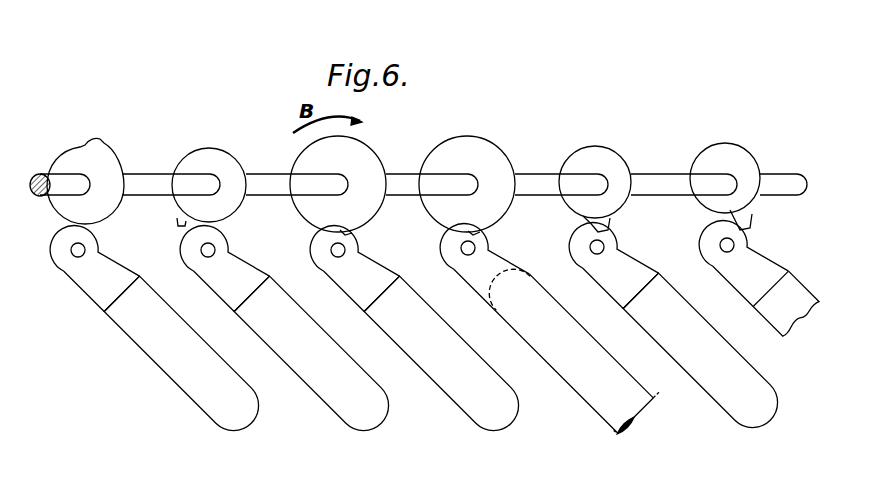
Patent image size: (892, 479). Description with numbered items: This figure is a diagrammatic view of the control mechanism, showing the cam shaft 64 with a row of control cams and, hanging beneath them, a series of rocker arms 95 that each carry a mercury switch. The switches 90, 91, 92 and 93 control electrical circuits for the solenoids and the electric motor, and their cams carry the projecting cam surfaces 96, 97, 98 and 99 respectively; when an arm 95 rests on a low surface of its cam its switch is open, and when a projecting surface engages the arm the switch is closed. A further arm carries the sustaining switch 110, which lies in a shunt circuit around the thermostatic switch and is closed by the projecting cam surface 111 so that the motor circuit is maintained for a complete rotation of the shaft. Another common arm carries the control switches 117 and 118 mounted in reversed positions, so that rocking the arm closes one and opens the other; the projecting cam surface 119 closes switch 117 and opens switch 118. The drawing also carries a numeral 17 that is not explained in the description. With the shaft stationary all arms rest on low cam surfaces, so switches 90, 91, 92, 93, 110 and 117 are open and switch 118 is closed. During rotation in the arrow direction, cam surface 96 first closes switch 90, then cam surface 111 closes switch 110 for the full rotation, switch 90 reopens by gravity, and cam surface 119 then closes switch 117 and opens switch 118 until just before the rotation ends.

The cam shaft 64 is at (530, 182).
The cam surface 99 is at (107, 162).
The cam surface 98 is at (180, 221).
The projecting cam surface 111 is at (376, 220).
The projecting cam surface 119 is at (508, 214).
The cam surface 96 is at (609, 226).
The cam surface 97 is at (748, 222).
The rocker arm 95 is at (90, 288).
The switch 93 is at (193, 383).
The switch 92 is at (327, 393).
The sustaining switch 110 is at (467, 398).
The arm 17 is at (500, 312).
The control switch 118 is at (512, 300).
The control switch 117 is at (607, 425).
The switch 90 is at (717, 391).
The switch 91 is at (783, 321).